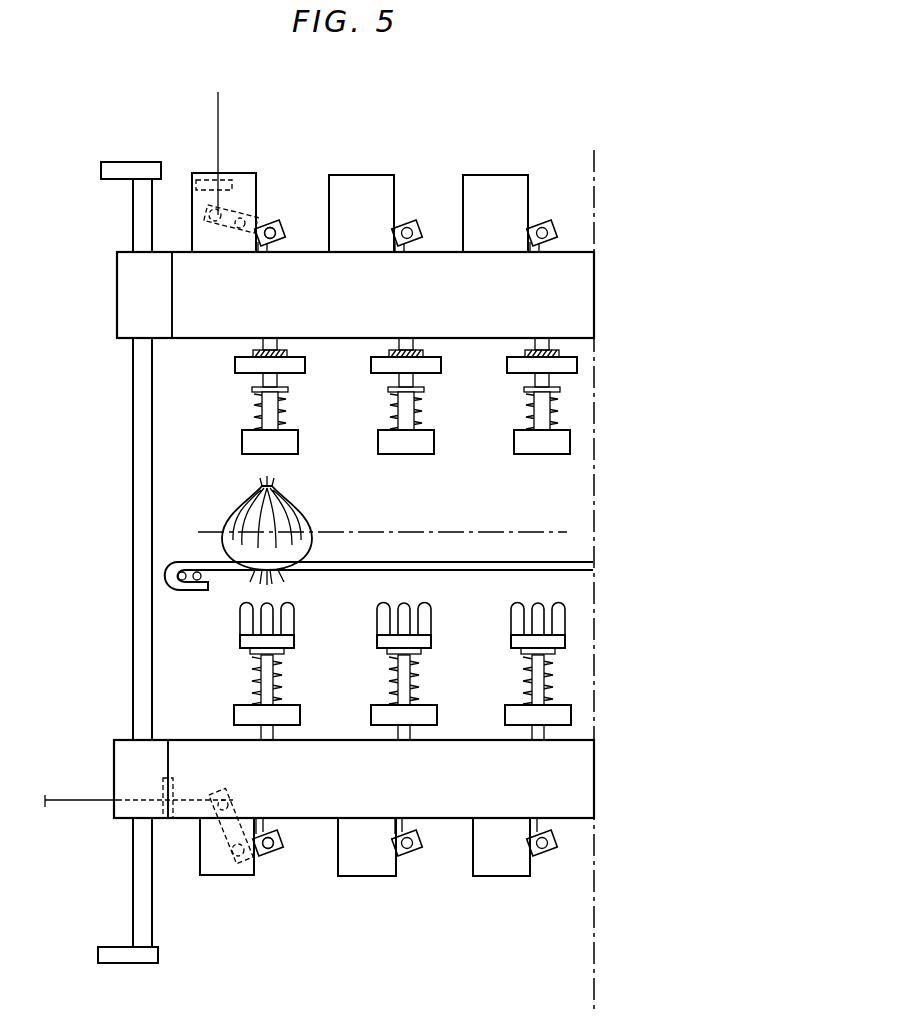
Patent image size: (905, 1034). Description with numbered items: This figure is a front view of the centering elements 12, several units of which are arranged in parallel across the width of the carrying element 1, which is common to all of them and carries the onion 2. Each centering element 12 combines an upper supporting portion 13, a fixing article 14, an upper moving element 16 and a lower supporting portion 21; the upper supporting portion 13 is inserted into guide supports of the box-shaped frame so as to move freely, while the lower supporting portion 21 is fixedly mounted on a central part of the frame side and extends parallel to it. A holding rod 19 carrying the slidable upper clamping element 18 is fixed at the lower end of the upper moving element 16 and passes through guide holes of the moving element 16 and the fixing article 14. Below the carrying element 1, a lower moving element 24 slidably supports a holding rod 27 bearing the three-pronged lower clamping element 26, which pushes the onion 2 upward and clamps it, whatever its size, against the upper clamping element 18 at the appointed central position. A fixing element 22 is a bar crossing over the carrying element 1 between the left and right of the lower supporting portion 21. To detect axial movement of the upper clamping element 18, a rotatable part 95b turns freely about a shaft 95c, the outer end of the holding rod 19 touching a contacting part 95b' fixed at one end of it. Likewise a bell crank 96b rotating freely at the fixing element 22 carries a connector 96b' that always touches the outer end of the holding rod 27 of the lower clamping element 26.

The carrying element 1 is at (408, 558).
The onion 2 is at (300, 520).
The centering element 12 is at (292, 106).
The upper supporting portion 13 is at (127, 290).
The fixing article 14 is at (188, 270).
The upper moving element 16 is at (302, 363).
The upper clamping element 18 is at (285, 443).
The holding rod 19 is at (270, 405).
The lower supporting portion 21 is at (133, 762).
The fixing element 22 is at (190, 750).
The lower moving element 24 is at (290, 717).
The lower clamping element 26 is at (289, 628).
The holding rod 27 is at (268, 665).
The rotatable part 95b is at (285, 199).
The contacting part 95b' is at (294, 211).
The shaft 95c is at (241, 214).
The bell crank 96b is at (267, 869).
The connector 96b' is at (301, 866).